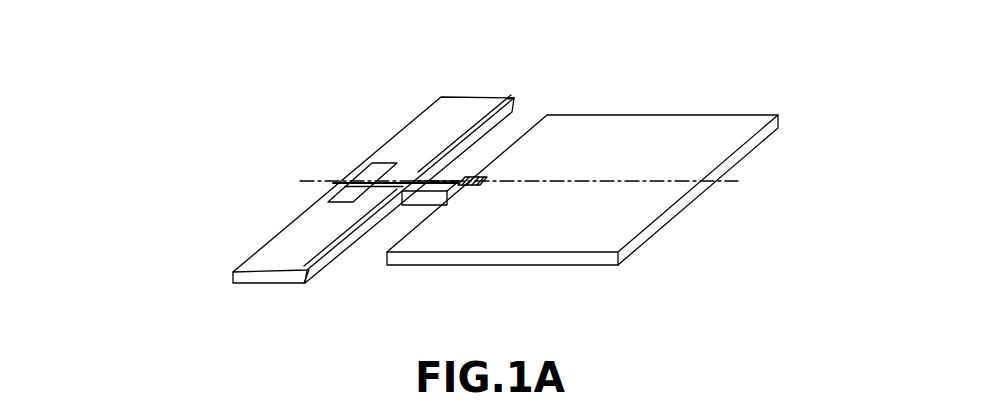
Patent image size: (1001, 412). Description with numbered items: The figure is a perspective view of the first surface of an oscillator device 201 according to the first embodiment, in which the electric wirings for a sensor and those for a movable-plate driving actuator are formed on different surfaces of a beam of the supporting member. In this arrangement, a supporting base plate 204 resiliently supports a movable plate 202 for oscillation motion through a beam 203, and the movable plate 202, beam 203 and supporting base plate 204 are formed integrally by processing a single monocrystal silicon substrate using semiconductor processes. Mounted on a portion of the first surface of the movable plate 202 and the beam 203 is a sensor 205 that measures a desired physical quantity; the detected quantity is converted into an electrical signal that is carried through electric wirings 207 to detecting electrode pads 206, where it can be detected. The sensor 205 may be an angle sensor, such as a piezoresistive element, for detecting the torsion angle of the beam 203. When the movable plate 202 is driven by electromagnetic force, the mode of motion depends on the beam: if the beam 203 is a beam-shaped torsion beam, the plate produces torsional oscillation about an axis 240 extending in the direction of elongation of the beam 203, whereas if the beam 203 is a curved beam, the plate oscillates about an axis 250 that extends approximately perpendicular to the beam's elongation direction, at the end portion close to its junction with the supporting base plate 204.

The oscillator device 201 is at (538, 94).
The movable plate 202 is at (668, 150).
The beam 203 is at (452, 172).
The supporting base plate 204 is at (275, 253).
The sensor 205 is at (452, 172).
The detecting electrode pads 206 is at (300, 184).
The electric wirings 207 is at (405, 180).
The axis 240 is at (326, 181).
The axis 250 is at (304, 273).